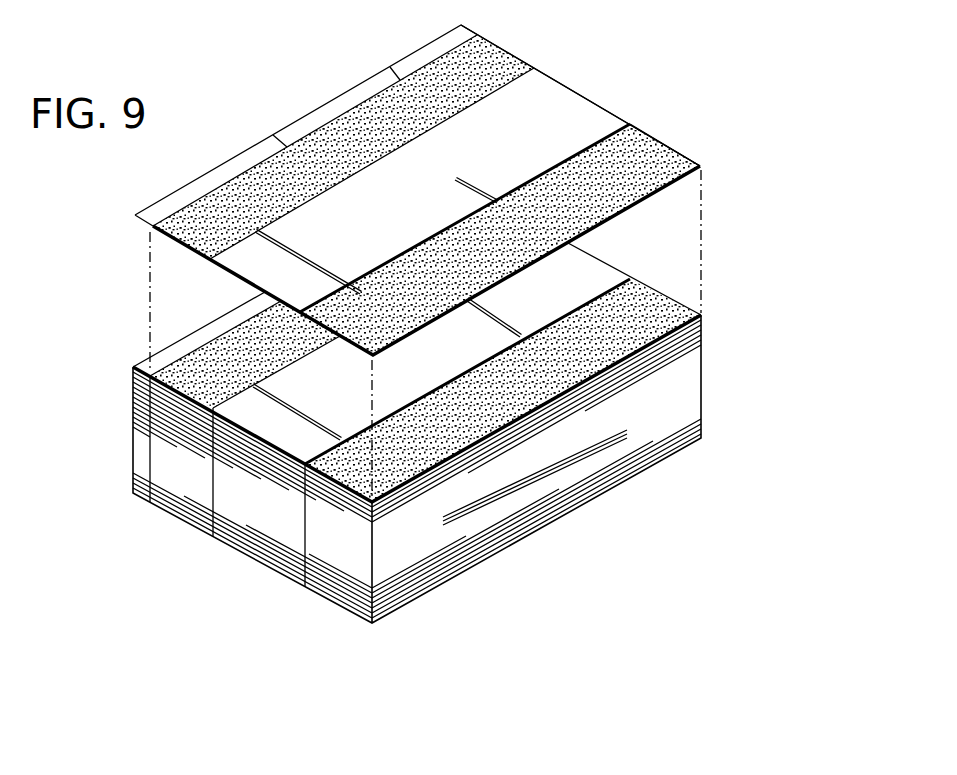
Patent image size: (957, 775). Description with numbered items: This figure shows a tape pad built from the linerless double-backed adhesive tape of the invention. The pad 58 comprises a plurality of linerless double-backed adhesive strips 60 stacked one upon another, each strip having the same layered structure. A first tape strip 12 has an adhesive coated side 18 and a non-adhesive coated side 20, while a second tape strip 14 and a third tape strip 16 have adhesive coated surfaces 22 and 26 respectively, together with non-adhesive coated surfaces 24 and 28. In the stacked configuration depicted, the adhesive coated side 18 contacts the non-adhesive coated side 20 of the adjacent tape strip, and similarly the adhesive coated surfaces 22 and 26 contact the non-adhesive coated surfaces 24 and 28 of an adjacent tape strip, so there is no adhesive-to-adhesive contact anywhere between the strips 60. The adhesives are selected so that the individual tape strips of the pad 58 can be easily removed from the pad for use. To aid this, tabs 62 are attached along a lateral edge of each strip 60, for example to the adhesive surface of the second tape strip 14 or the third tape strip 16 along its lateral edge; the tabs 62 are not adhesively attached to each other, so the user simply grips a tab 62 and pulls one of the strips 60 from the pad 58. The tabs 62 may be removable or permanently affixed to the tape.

The first tape strip 12 is at (535, 108).
The second tape strip 14 is at (243, 121).
The third tape strip 16 is at (667, 188).
The adhesive coated side 18 is at (603, 107).
The non-adhesive coated side 20 is at (467, 147).
The adhesive coated surface 22 is at (343, 133).
The non-adhesive coated surface 24 is at (190, 250).
The adhesive coated surface 26 is at (637, 163).
The non-adhesive coated surface 28 is at (430, 323).
The pad 58 is at (720, 407).
The linerless double-backed adhesive strips 60 is at (148, 399).
The tabs 62 is at (158, 207).